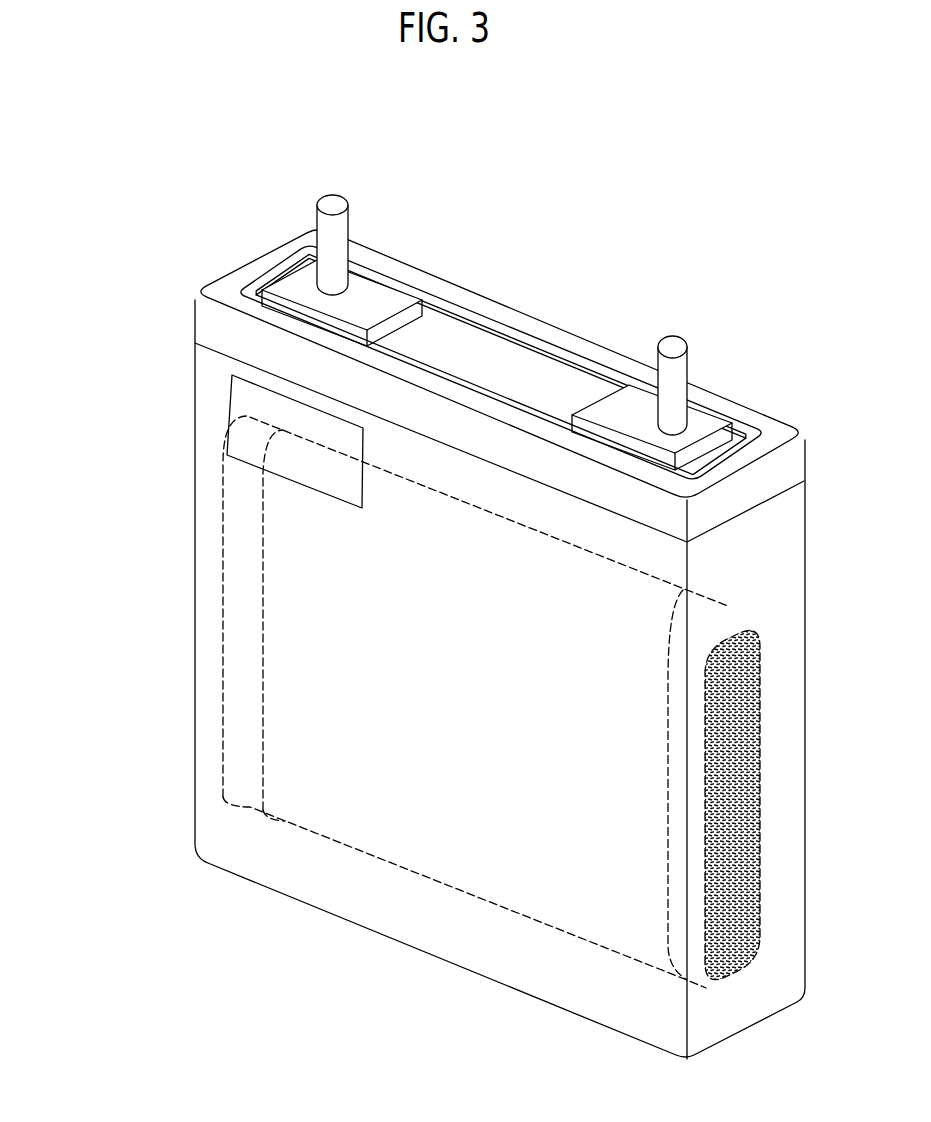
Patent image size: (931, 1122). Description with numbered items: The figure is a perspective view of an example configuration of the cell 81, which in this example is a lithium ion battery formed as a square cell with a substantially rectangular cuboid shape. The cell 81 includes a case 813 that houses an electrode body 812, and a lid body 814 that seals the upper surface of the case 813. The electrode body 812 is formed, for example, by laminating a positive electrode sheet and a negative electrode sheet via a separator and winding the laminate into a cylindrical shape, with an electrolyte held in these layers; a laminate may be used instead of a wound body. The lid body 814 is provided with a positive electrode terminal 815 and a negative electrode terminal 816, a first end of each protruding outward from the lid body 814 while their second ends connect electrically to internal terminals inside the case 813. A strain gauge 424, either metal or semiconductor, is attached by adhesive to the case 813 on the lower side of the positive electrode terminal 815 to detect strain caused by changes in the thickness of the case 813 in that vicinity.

The cell 81 is at (671, 214).
The electrode body 812 is at (272, 548).
The case 813 is at (345, 890).
The lid body 814 is at (780, 427).
The positive electrode terminal 815 is at (330, 207).
The negative electrode terminal 816 is at (672, 347).
The strain gauge 424 is at (262, 408).